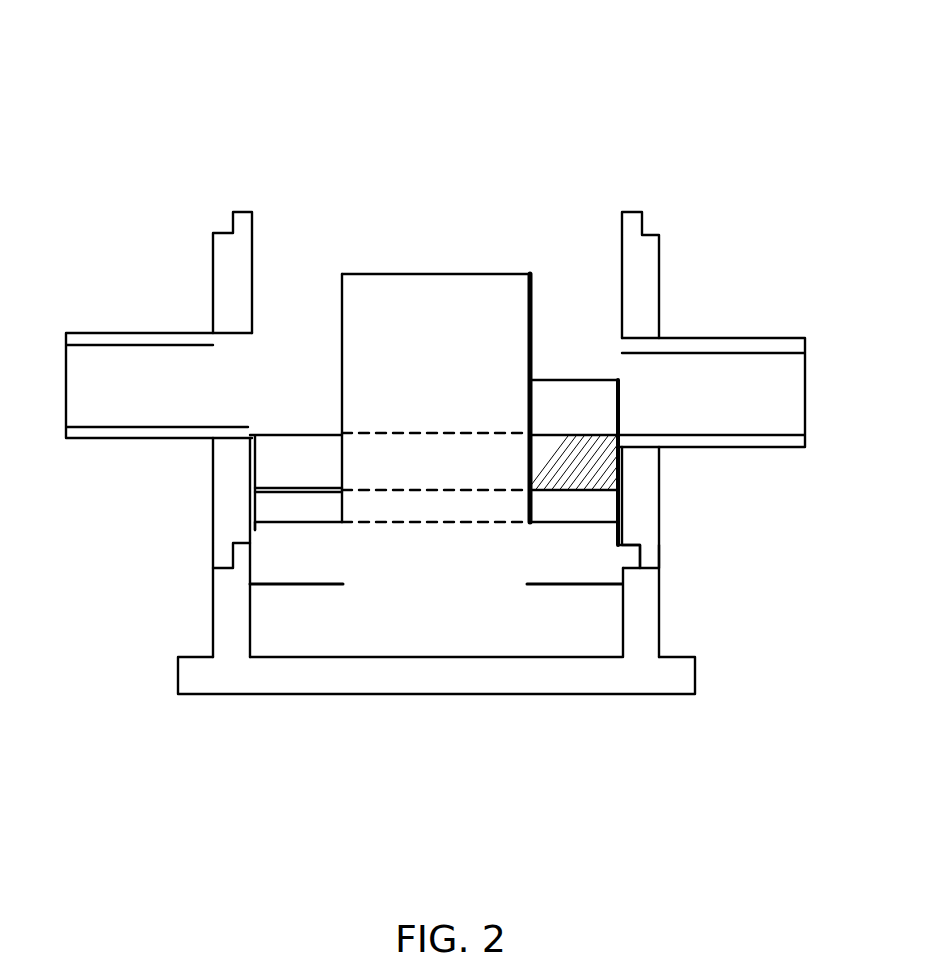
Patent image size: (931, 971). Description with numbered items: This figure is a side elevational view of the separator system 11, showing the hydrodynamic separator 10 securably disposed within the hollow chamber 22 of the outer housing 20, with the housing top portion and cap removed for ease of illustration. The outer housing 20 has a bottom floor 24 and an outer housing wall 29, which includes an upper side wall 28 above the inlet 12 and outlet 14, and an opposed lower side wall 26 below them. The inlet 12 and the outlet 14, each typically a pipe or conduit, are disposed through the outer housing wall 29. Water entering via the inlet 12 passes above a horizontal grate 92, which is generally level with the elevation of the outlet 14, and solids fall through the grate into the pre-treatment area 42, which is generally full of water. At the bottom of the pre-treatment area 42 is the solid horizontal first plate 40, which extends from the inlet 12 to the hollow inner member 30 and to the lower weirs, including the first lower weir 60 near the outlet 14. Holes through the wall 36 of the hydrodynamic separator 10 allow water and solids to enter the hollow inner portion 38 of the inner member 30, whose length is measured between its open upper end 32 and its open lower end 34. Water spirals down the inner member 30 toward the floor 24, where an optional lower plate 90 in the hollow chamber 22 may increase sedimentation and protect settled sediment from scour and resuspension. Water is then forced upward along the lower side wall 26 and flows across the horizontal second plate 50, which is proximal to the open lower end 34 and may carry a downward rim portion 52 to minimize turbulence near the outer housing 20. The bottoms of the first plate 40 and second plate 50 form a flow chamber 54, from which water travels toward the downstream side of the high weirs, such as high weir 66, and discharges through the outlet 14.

The hydrodynamic separator 10 is at (547, 229).
The separator system 11 is at (287, 83).
The inlet 12 is at (128, 333).
The outlet 14 is at (782, 338).
The outer housing 20 is at (481, 669).
The hollow chamber 22 is at (277, 262).
The bottom floor 24 is at (540, 652).
The lower side wall 26 is at (650, 600).
The upper side wall 28 is at (657, 281).
The outer housing wall 29 is at (212, 263).
The inner member 30 is at (342, 305).
The open upper end 32 is at (528, 275).
The open lower end 34 is at (528, 513).
The wall 36 is at (530, 314).
The hollow inner portion 38 is at (465, 362).
The first plate 40 is at (229, 527).
The pre-treatment area 42 is at (272, 473).
The second plate 50 is at (558, 524).
The downward rim portion 52 is at (258, 530).
The flow chamber 54 is at (594, 508).
The first lower weir 60 is at (555, 437).
The high weir 66 is at (590, 378).
The lower plate 90 is at (297, 584).
The horizontal grate 92 is at (297, 437).